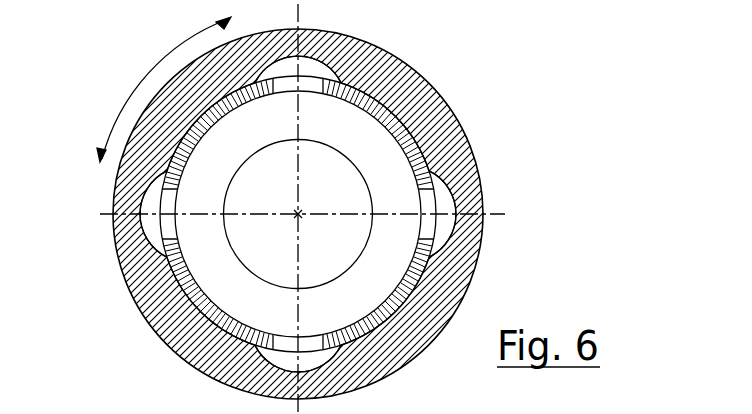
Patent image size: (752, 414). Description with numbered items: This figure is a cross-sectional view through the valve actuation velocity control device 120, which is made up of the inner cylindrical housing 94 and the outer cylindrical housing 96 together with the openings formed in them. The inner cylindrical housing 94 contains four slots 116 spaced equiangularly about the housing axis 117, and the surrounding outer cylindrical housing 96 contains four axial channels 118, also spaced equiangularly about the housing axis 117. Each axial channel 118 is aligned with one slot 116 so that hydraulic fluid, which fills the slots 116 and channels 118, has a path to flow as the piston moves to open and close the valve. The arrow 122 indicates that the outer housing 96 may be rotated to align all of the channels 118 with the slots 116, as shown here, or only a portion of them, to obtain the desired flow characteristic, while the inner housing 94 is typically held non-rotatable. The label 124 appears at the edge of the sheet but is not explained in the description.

The outer ring 94 is at (422, 84).
The inner ring 96 is at (470, 290).
The recess 116 is at (284, 88).
The central axis 117 is at (298, 214).
The slot 118 is at (305, 62).
The ring assembly 120 is at (485, 137).
The rotation direction arrow 122 is at (145, 76).
The element 124 is at (63, 407).